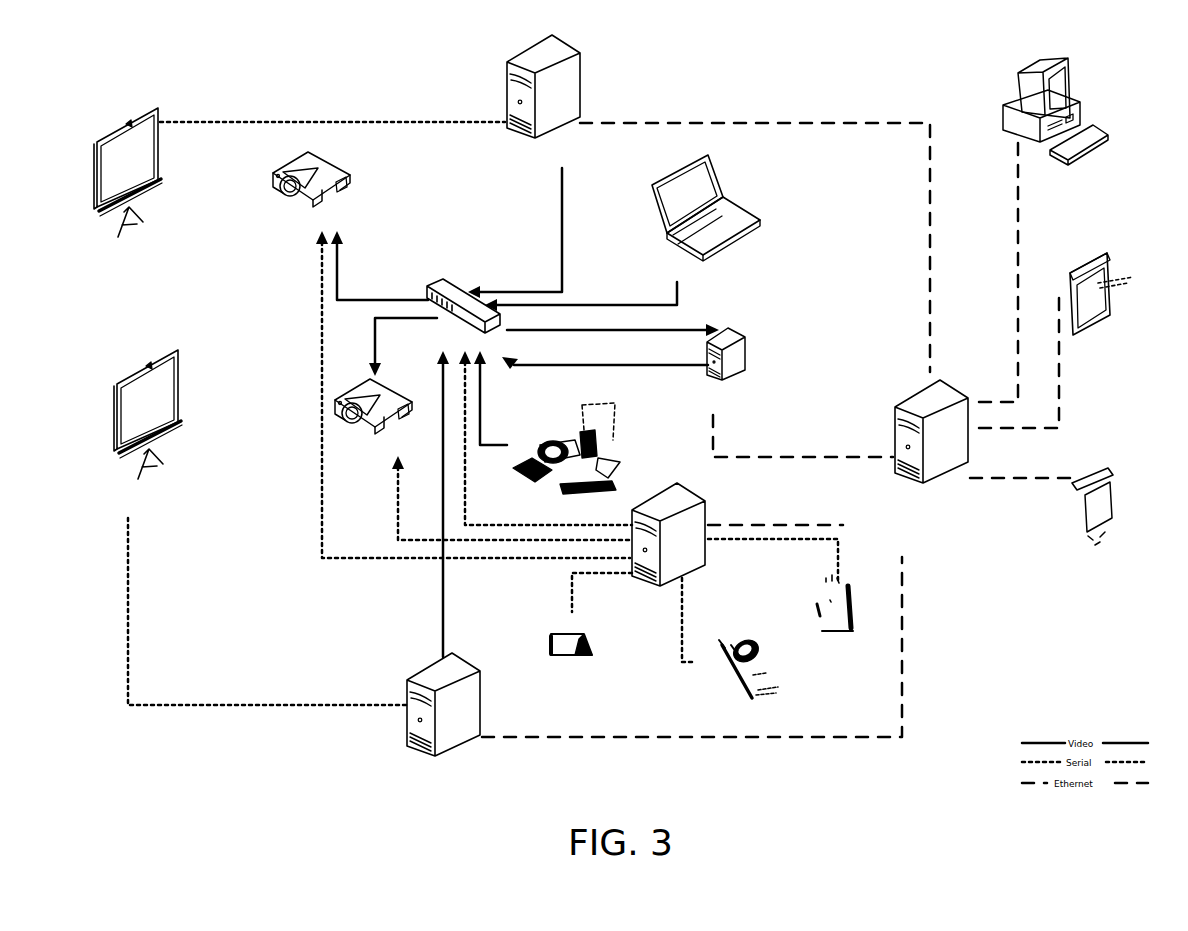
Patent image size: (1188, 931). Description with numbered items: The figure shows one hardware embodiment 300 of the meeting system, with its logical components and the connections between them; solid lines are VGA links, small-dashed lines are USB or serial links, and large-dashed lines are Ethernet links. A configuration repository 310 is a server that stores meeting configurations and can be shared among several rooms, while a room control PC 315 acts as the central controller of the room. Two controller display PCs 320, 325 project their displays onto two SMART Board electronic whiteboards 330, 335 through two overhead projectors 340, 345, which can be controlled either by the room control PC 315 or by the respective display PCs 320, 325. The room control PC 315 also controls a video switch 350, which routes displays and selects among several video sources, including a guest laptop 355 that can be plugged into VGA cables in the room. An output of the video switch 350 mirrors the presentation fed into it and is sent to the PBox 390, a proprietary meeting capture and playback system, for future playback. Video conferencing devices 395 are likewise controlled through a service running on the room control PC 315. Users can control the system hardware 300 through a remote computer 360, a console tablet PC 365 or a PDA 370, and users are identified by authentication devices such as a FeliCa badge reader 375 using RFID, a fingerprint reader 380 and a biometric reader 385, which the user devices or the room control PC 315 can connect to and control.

The hardware embodiment of the system 300 is at (872, 84).
The configuration repository 310 is at (915, 394).
The room control personal computer (PC) 315 is at (707, 500).
The display PC 1 320 is at (580, 53).
The display PC 2 325 is at (428, 666).
The SMART Board 1 330 is at (153, 108).
The SMART Board 2 335 is at (177, 353).
The projector 1 340 is at (346, 168).
The projector 2 345 is at (410, 394).
The video switch 350 is at (452, 280).
The guest laptop 355 is at (737, 202).
The remote computer 360 is at (1068, 63).
The console tablet PC 365 is at (1107, 250).
The personal digital assistant (PDA) 370 is at (1113, 476).
The FeliCa badge reader 375 is at (563, 632).
The fingerprint reader 380 is at (765, 650).
The biometric reader 385 is at (813, 587).
The PBox (Projector Box) 390 is at (743, 330).
The video conferencing devices 395 is at (613, 426).